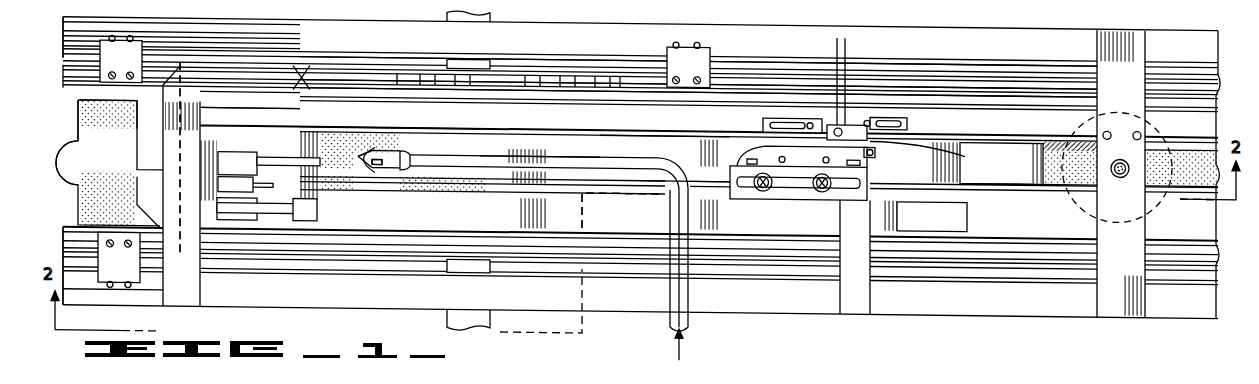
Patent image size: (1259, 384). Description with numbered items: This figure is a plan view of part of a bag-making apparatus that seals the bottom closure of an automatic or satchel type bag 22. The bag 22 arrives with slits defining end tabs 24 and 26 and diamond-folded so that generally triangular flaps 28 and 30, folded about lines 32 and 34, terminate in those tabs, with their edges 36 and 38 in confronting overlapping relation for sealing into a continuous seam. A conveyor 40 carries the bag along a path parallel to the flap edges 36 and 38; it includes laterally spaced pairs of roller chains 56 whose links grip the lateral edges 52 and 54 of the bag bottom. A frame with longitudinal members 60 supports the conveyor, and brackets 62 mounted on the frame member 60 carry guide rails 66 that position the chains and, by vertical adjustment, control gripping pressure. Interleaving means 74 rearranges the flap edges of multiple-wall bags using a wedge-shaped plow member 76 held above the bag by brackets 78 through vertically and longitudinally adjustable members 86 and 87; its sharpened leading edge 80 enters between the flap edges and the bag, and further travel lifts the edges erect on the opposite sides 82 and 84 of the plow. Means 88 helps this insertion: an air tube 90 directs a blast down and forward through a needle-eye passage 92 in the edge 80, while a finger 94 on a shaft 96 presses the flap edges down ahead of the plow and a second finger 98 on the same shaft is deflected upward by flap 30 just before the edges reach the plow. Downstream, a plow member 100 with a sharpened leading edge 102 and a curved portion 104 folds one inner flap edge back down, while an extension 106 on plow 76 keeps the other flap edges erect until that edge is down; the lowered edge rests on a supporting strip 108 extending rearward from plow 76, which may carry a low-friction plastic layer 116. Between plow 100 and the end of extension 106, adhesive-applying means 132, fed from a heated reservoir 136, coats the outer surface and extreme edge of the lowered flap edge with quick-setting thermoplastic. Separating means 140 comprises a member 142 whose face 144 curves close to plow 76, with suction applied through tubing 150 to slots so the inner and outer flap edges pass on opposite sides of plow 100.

The bag 22 is at (125, 128).
The end tab 24 is at (83, 199).
The end tab 26 is at (387, 131).
The triangular flap 28 is at (160, 88).
The triangular flap 30 is at (328, 110).
The fold line 32 is at (178, 199).
The fold line 34 is at (353, 116).
The flap edge 36 is at (136, 174).
The flap edge 38 is at (132, 152).
The conveyor 40 is at (570, 69).
The lateral edge of bag bottom 52 is at (234, 64).
The lateral edge of bag bottom 54 is at (253, 258).
The roller chain 56 is at (498, 77).
The frame member 60 is at (384, 32).
The bracket 62 is at (112, 63).
The guide rail 66 is at (373, 82).
The interleaving means 74 is at (745, 82).
The plow member 76 is at (682, 152).
The bracket 78 is at (670, 206).
The leading edge 80 is at (359, 163).
The side of plow member 82 is at (628, 139).
The side of plow member 84 is at (618, 188).
The adjustable member 86 is at (782, 192).
The adjustable member 87 is at (760, 152).
The flap urging means 88 is at (406, 154).
The air tube 90 is at (558, 162).
The passage 92 is at (380, 162).
The finger 94 is at (280, 158).
The shaft 96 is at (236, 170).
The second finger 98 is at (291, 207).
The plow member 100 is at (989, 160).
The leading edge 102 is at (890, 122).
The curved portion 104 is at (881, 180).
The extension 106 is at (1009, 175).
The supporting strip 108 is at (1199, 186).
The plastic layer 116 is at (1189, 158).
The adhesive applying means 132 is at (1113, 172).
The heated reservoir 136 is at (1107, 381).
The flap separating means 140 is at (850, 119).
The member 142 is at (820, 118).
The face 144 is at (804, 159).
The suction tubing 150 is at (848, 30).